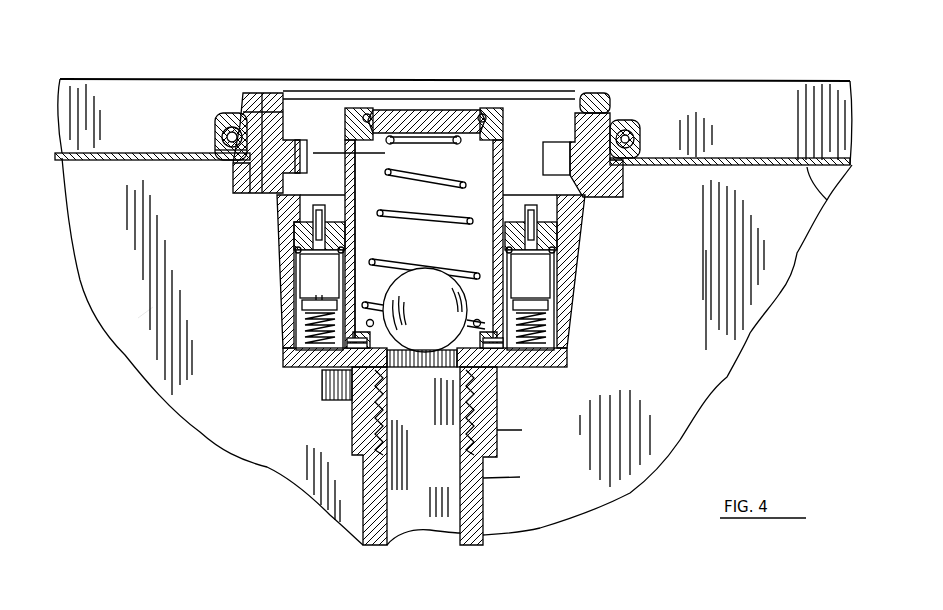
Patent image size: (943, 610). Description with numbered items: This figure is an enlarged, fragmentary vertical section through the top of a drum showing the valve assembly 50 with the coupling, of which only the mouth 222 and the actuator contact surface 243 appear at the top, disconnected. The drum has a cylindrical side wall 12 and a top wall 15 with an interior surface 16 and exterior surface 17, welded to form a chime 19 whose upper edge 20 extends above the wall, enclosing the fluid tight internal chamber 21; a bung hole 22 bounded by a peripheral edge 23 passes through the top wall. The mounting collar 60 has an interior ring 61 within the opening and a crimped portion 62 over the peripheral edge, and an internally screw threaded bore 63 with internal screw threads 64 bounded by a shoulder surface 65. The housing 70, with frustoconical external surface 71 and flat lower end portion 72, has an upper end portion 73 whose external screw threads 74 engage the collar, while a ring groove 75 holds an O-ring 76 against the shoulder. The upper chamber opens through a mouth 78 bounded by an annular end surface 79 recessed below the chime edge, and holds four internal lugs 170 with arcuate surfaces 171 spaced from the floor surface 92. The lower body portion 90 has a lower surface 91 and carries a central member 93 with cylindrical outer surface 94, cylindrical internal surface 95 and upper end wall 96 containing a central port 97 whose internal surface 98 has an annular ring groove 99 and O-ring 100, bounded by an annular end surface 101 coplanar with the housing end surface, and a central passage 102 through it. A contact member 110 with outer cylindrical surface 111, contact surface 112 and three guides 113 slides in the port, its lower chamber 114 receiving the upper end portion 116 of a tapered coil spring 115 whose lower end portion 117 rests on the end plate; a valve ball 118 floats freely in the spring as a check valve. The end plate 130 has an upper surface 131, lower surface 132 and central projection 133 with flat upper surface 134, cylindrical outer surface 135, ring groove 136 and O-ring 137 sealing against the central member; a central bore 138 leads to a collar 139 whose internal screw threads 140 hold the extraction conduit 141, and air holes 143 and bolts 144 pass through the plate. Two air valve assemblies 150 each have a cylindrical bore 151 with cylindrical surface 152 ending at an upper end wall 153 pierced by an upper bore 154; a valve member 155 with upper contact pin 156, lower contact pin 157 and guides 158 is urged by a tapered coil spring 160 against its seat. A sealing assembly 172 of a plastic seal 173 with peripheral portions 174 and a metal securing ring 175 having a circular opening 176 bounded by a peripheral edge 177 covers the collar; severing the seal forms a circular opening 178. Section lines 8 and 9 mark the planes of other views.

The section line 8- 8 is at (335, 153).
The section line 9- 9 is at (612, 288).
The side wall 12 is at (690, 292).
The top wall 15 is at (853, 164).
The interior surface 16 is at (828, 198).
The exterior surface 17 is at (820, 158).
The chime 19 is at (760, 129).
The upper edge 20 is at (688, 81).
The internal chamber 21 is at (153, 307).
The bung hole 22 is at (246, 187).
The peripheral edge 23 is at (246, 160).
The valve assembly 50 is at (272, 295).
The mounting collar 60 is at (624, 177).
The interior ring 61 is at (603, 197).
The crimped portion 62 is at (633, 122).
The internally screw threaded bore 63 is at (575, 110).
The internal screw threads 64 is at (606, 103).
The shoulder surface 65 is at (250, 122).
The housing 70 is at (280, 245).
The frustoconical external surface 71 is at (583, 240).
The lower end portion 72 is at (290, 327).
The upper end portion 73 is at (247, 100).
The external screw threads 74 is at (228, 147).
The ring groove 75 is at (267, 97).
The O-ring 76 is at (247, 108).
The mouth 78 is at (297, 93).
The annular end surface 79 is at (606, 95).
The lower body portion 90 is at (283, 235).
The lower surface 91 is at (287, 360).
The floor surface 92 is at (560, 235).
The central member 93 is at (355, 108).
The cylindrical outer surface 94 is at (505, 186).
The cylindrical internal surface 95 is at (482, 205).
The upper end wall 96 is at (487, 110).
The central port 97 is at (420, 110).
The internal surface 98 is at (455, 127).
The annular ring groove 99 is at (478, 110).
The O-ring 100 is at (368, 114).
The annular end surface 101 is at (498, 110).
The central passage 102 is at (422, 240).
The contact member 110 is at (433, 122).
The outer cylindrical surface 111 is at (372, 164).
The contact surface 112 is at (408, 110).
The guides 113 is at (400, 200).
The lower chamber 114 is at (423, 157).
The tapered coil spring 115 is at (395, 257).
The upper end portion 116 is at (463, 140).
The lower end portion 117 is at (453, 307).
The valve ball 118 is at (437, 326).
The end plate 130 is at (547, 367).
The upper surface 131 is at (583, 365).
The lower surface 132 is at (370, 398).
The central projection 133 is at (467, 330).
The upper surface 134 is at (350, 287).
The cylindrical outer surface 135 is at (557, 332).
The ring groove 136 is at (560, 348).
The O-ring 137 is at (557, 368).
The central bore 138 is at (447, 368).
The collar 139 is at (497, 431).
The internal screw threads 140 is at (457, 443).
The extraction conduit 141 is at (485, 487).
The air holes 143 is at (517, 367).
The bolts 144 is at (336, 401).
The air valve assemblies 150 is at (300, 310).
The cylindrical bore 151 is at (292, 280).
The cylindrical surface 152 is at (288, 342).
The upper end wall 153 is at (293, 237).
The upper bore 154 is at (387, 170).
The valve member 155 is at (332, 280).
The upper contact pin 156 is at (320, 212).
The lower contact pin 157 is at (422, 314).
The guides 158 is at (288, 278).
The tapered coil spring 160 is at (290, 370).
The internal lugs 170 is at (290, 112).
The arcuate surfaces 171 is at (318, 92).
The sealing assembly 172 is at (650, 120).
The plastic seal 173 is at (225, 125).
The peripheral portions 174 is at (215, 150).
The metal securing ring 175 is at (245, 90).
The circular opening 176 is at (318, 93).
The peripheral edge 177 is at (580, 112).
The circular opening 178 is at (530, 108).
The mouth 222 is at (434, 4).
The contact surface 243 is at (499, 4).